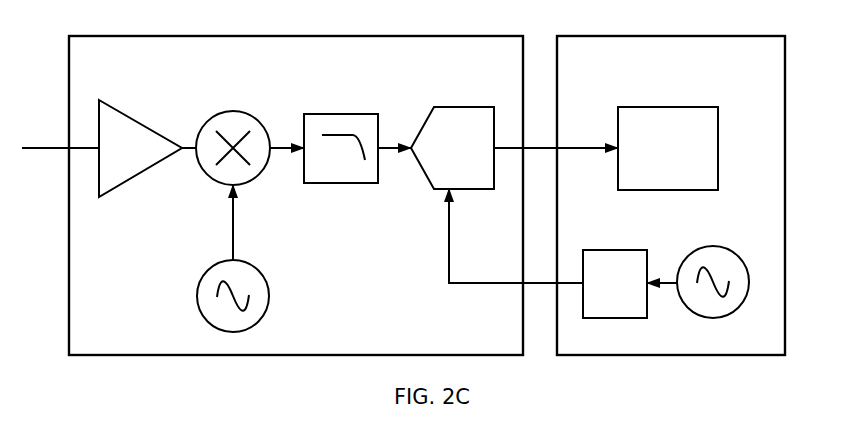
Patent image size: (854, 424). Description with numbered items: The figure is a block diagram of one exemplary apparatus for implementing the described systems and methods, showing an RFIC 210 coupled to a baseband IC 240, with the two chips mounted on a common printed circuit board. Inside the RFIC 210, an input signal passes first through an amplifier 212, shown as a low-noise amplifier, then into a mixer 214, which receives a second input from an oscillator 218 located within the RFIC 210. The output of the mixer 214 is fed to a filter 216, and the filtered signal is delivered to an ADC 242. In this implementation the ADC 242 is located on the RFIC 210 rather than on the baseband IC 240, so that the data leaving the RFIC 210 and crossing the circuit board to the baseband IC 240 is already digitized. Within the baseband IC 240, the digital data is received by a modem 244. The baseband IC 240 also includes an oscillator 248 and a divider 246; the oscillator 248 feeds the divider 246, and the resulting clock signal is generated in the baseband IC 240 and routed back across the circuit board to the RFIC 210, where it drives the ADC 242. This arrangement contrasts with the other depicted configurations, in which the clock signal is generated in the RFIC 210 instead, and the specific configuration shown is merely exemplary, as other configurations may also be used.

The RFIC 210 is at (295, 36).
The amplifier 212 is at (120, 108).
The mixer 214 is at (218, 111).
The filter 216 is at (334, 114).
The oscillator 218 is at (262, 322).
The baseband IC 240 is at (660, 36).
The ADC 242 is at (459, 189).
The modem 244 is at (667, 190).
The divider 246 is at (615, 318).
The oscillator 248 is at (713, 318).